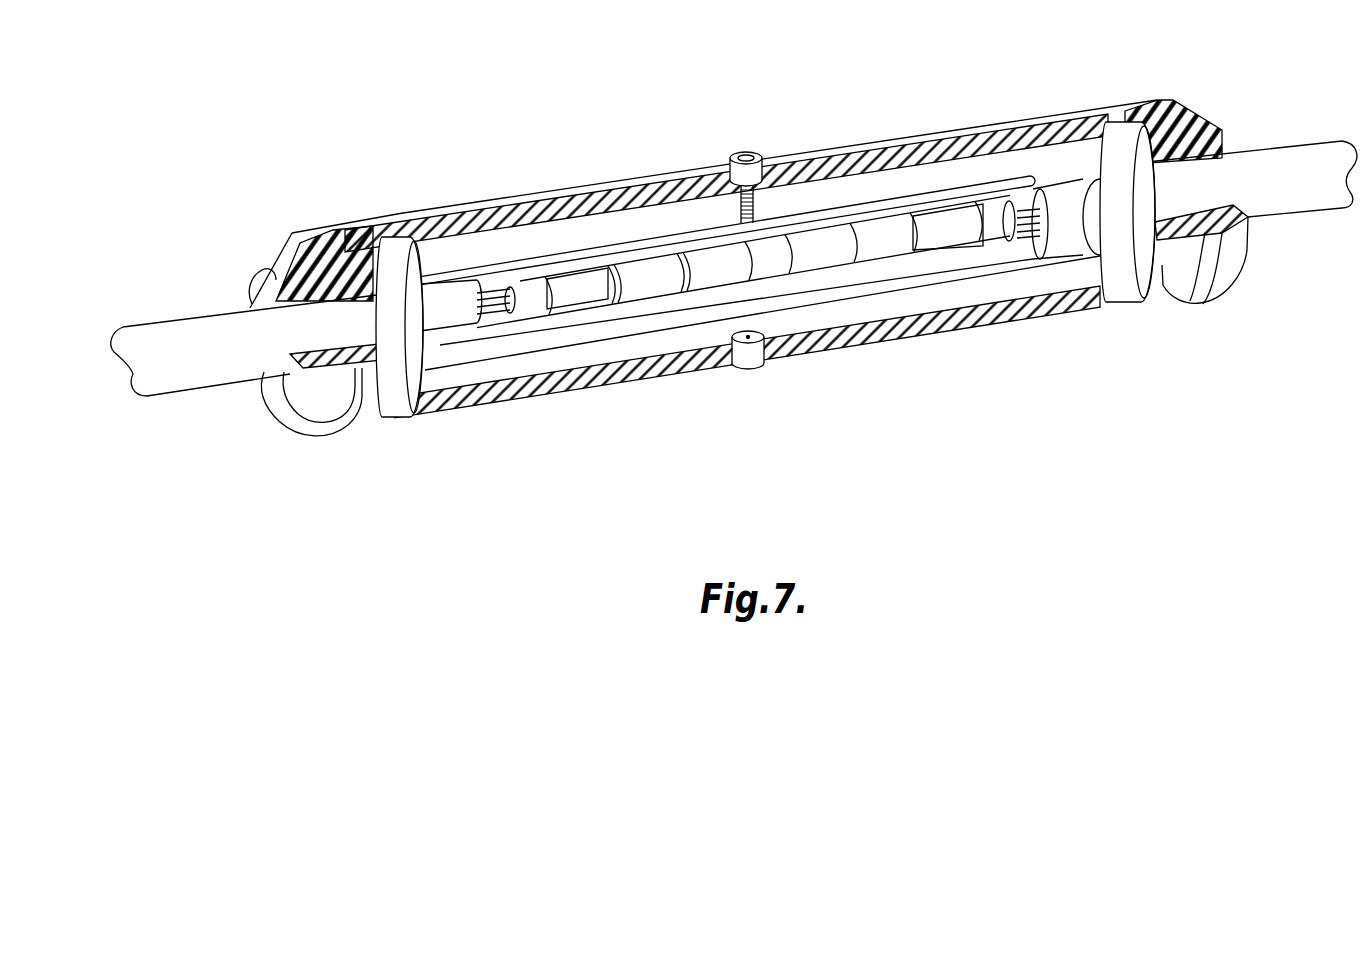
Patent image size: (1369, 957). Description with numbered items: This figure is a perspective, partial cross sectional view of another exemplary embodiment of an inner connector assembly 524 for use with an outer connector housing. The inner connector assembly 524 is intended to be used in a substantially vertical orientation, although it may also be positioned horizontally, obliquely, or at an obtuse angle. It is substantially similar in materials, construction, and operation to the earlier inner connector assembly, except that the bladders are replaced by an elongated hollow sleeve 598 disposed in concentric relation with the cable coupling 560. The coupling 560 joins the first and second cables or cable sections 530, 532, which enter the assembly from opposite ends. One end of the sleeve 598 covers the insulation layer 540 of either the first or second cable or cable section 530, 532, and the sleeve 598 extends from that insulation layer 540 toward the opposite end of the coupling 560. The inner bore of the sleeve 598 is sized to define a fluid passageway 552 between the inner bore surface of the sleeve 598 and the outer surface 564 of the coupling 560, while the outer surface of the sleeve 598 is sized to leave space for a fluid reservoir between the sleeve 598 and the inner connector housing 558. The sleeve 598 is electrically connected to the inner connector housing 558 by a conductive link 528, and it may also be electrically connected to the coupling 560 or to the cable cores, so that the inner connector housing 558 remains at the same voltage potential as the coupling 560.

The inner connector assembly 524 is at (262, 172).
The conductive link 528 is at (758, 173).
The first cable or cable section 530 is at (170, 330).
The second cable or cable section 532 is at (1275, 155).
The insulation layer 540 is at (455, 290).
The fluid passageway 552 is at (870, 218).
The inner connector housing 558 is at (1202, 97).
The cable coupling 560 is at (570, 275).
The outer surface of the coupling 564 is at (715, 272).
The elongated hollow sleeve 598 is at (955, 268).